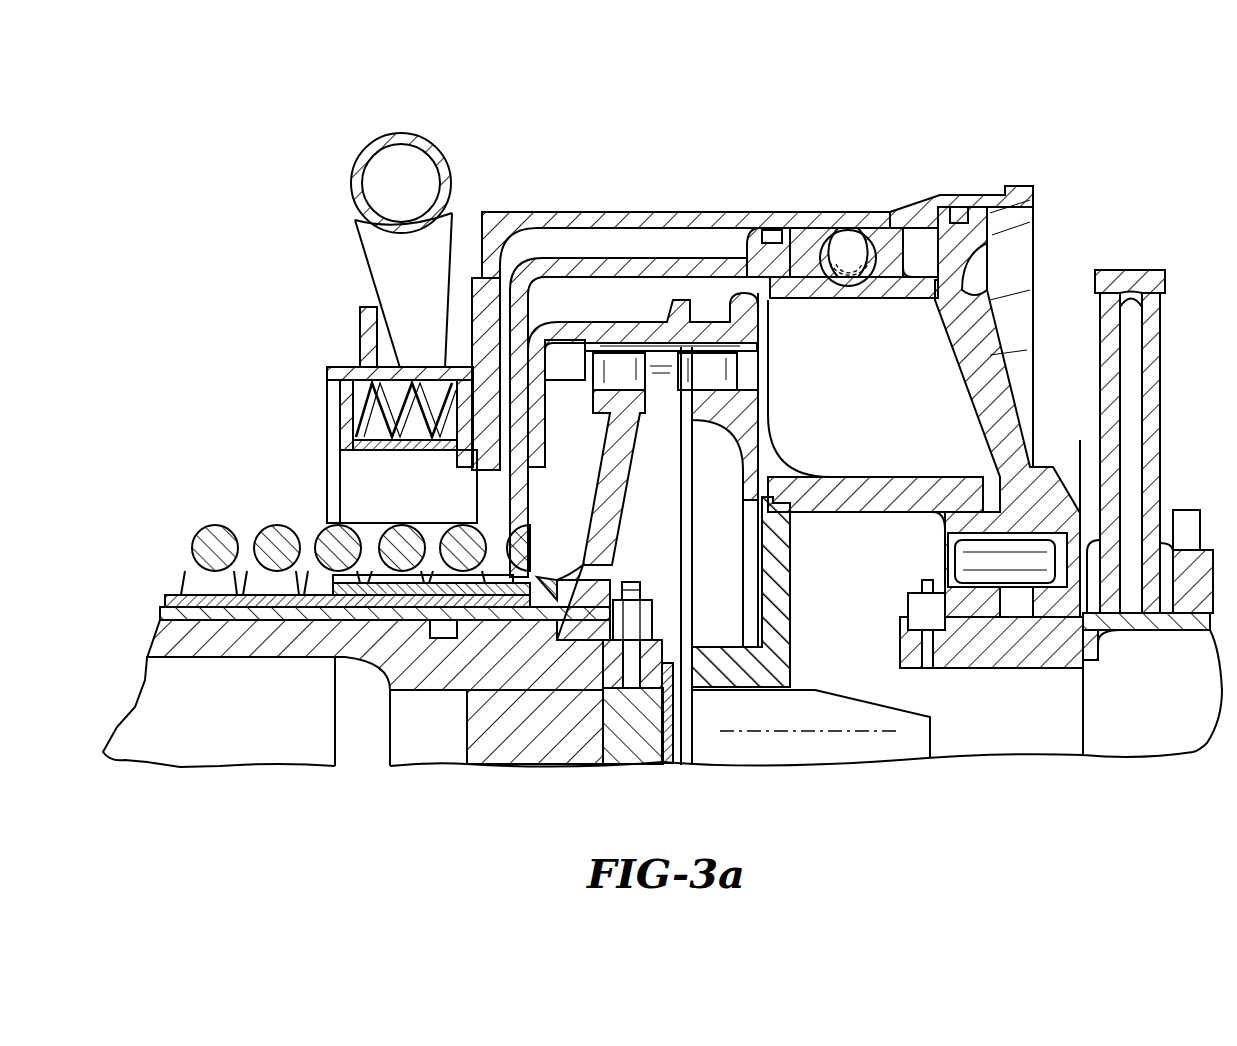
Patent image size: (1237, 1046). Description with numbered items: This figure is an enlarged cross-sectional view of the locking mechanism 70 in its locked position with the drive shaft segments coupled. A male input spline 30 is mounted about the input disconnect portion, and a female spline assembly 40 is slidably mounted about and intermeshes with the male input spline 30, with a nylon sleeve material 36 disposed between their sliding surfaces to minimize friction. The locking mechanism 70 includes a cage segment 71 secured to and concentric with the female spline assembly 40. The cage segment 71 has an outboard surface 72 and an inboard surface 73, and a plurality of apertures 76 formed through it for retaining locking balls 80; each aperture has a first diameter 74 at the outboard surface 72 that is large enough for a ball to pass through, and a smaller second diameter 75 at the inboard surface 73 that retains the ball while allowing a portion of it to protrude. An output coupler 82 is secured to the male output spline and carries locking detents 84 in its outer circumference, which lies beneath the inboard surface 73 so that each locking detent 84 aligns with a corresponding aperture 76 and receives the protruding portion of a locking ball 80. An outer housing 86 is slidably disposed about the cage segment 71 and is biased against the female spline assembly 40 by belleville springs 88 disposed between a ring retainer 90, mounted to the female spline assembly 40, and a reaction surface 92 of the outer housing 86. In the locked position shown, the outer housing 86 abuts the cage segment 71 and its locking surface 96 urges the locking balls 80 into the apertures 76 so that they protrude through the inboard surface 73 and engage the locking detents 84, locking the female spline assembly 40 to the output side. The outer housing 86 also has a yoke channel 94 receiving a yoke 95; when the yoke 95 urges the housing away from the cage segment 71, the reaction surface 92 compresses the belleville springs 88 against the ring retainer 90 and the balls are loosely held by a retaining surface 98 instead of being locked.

The male input spline 30 is at (473, 612).
The nylon sleeve material 36 is at (357, 600).
The female spline assembly 40 is at (328, 612).
The locking mechanism 70 is at (478, 110).
The cage segment 71 is at (649, 265).
The outboard surface 72 is at (595, 258).
The inboard surface 73 is at (714, 268).
The first diameter 74 is at (813, 222).
The second diameter 75 is at (810, 258).
The apertures 76 is at (876, 226).
The locking balls 80 is at (878, 226).
The output coupler 82 is at (965, 323).
The locking detents 84 is at (863, 296).
The outer housing 86 is at (512, 222).
The belleville springs 88 is at (353, 398).
The ring retainer 90 is at (340, 437).
The reaction surface 92 is at (430, 432).
The yoke channel 94 is at (355, 333).
The yoke 95 is at (350, 157).
The locking surface 96 is at (840, 220).
The retaining surface 98 is at (937, 196).